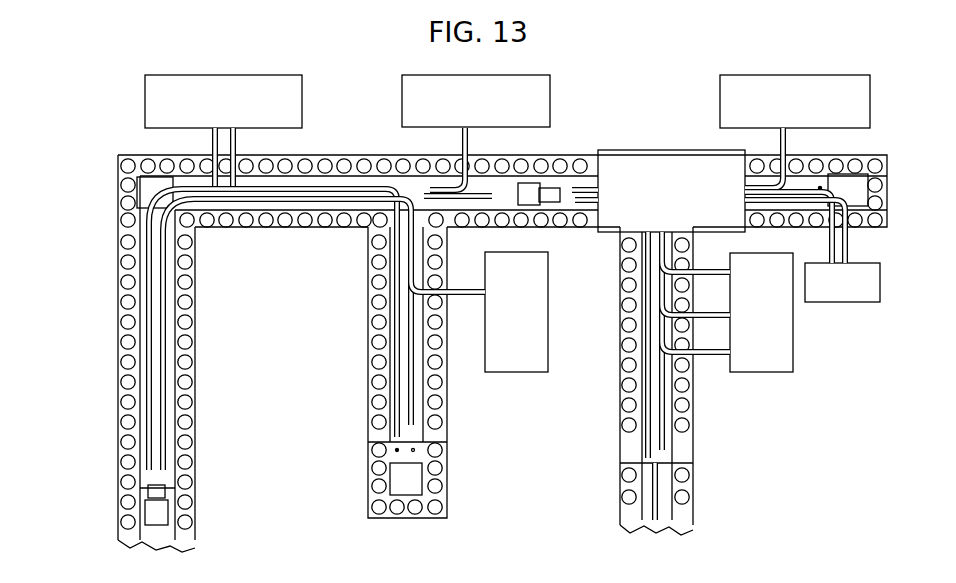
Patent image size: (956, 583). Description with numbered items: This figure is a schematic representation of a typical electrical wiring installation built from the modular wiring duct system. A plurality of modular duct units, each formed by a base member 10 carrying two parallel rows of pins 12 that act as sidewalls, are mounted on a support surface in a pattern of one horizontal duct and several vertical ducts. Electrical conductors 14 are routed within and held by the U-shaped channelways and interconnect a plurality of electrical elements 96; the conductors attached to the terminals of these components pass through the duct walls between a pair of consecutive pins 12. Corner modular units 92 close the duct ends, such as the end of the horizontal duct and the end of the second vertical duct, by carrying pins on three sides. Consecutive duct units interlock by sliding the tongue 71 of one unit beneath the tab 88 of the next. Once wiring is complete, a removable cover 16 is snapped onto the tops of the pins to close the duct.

The base member 10 is at (252, 240).
The pins 12 is at (355, 157).
The electrical conductors 14 is at (236, 142).
The cover 16 is at (685, 145).
The tongue 71 is at (168, 485).
The tab 88 is at (160, 513).
The corner modular unit 92 is at (114, 170).
The electrical elements 96 is at (257, 86).